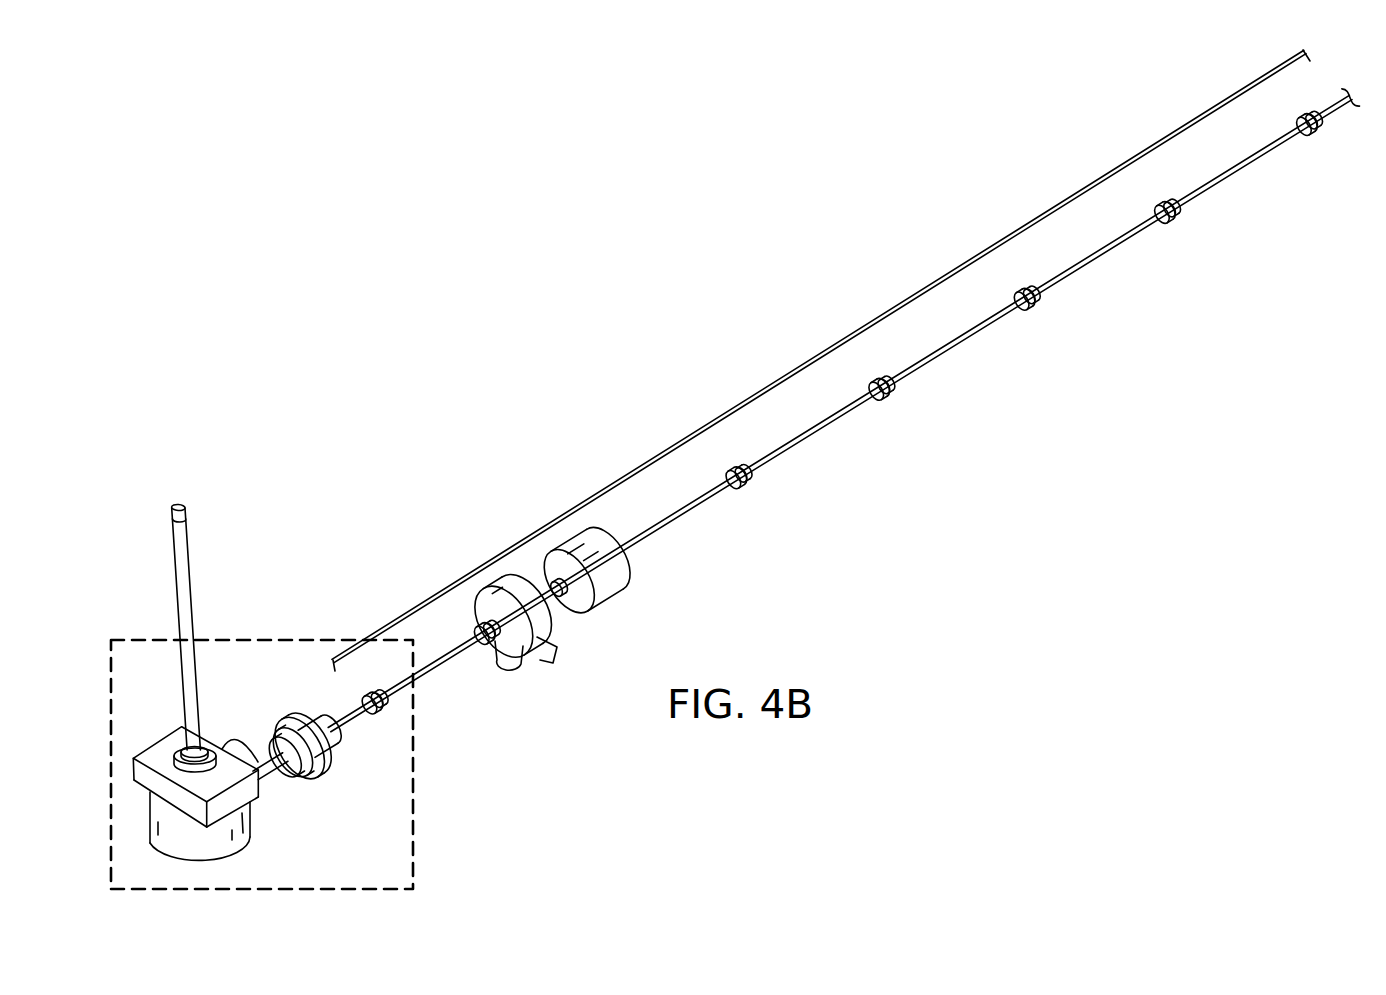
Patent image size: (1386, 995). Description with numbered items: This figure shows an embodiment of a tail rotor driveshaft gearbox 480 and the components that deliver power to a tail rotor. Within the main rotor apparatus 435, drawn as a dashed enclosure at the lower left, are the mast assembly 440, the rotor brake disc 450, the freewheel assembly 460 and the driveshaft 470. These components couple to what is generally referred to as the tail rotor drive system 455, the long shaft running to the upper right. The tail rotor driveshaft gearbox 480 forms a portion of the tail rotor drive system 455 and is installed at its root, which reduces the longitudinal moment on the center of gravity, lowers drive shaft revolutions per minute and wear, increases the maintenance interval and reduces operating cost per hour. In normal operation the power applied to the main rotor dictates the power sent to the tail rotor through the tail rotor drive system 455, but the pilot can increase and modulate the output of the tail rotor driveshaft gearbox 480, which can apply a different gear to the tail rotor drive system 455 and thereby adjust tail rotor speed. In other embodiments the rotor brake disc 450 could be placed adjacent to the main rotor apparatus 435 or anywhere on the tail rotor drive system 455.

The main rotor apparatus 435 is at (263, 892).
The mast assembly 440 is at (190, 566).
The rotor brake disc 450 is at (292, 722).
The tail rotor drive system 455 is at (823, 359).
The freewheel assembly 460 is at (341, 757).
The driveshaft 470 is at (268, 784).
The tail rotor driveshaft gearbox 480 is at (607, 602).